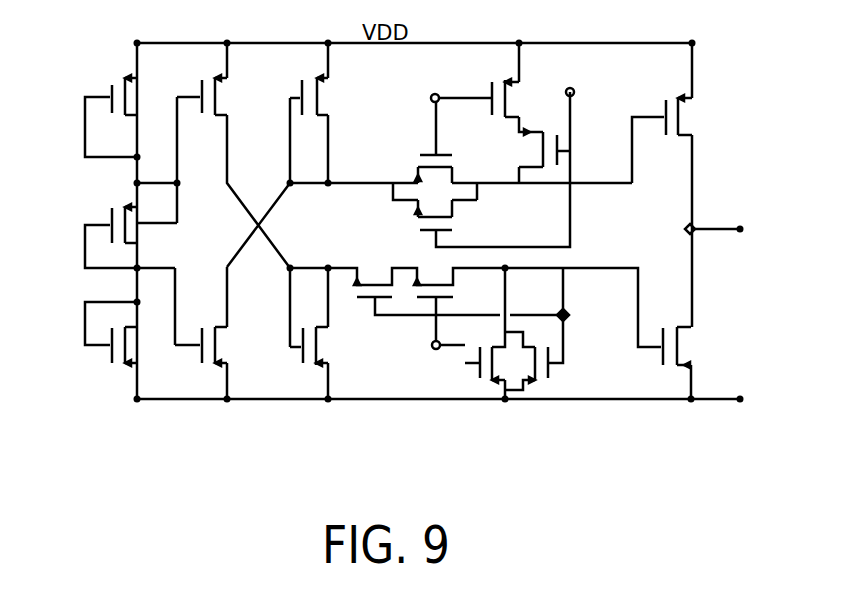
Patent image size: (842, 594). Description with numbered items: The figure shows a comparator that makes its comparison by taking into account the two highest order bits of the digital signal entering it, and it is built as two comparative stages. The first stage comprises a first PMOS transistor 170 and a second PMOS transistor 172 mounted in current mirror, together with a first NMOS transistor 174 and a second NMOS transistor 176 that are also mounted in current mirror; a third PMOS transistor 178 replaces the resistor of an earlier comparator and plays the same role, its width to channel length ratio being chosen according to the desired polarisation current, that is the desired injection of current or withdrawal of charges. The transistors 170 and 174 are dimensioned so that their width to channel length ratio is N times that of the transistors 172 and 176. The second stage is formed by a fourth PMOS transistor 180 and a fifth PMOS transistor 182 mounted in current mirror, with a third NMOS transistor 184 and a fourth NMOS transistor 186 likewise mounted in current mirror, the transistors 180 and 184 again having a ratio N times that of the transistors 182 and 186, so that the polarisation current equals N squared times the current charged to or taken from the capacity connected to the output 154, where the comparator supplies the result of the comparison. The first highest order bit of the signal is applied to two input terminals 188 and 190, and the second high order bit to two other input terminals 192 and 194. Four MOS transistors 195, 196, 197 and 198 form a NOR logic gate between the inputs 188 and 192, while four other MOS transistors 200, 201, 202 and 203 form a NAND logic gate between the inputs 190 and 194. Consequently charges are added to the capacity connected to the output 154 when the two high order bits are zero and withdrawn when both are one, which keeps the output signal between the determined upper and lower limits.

The first PMOS transistor 170 is at (118, 88).
The third PMOS transistor 178 is at (118, 218).
The first NMOS transistor 174 is at (115, 348).
The second PMOS transistor 172 is at (222, 95).
The second NMOS transistor 176 is at (218, 348).
The fourth PMOS transistor 180 is at (323, 98).
The third NMOS transistor 184 is at (316, 365).
The MOS transistor 197 is at (415, 158).
The MOS transistor 198 is at (415, 227).
The input terminal 188 is at (432, 97).
The MOS transistor 195 is at (497, 80).
The MOS transistor 196 is at (548, 162).
The input terminal 192 is at (575, 92).
The fifth PMOS transistor 182 is at (672, 135).
The output 154 is at (710, 232).
The fourth NMOS transistor 186 is at (672, 363).
The input terminal 194 is at (568, 318).
The MOS transistor 200 is at (385, 300).
The MOS transistor 203 is at (436, 273).
The input terminal 190 is at (430, 350).
The MOS transistor 201 is at (487, 383).
The MOS transistor 202 is at (540, 383).